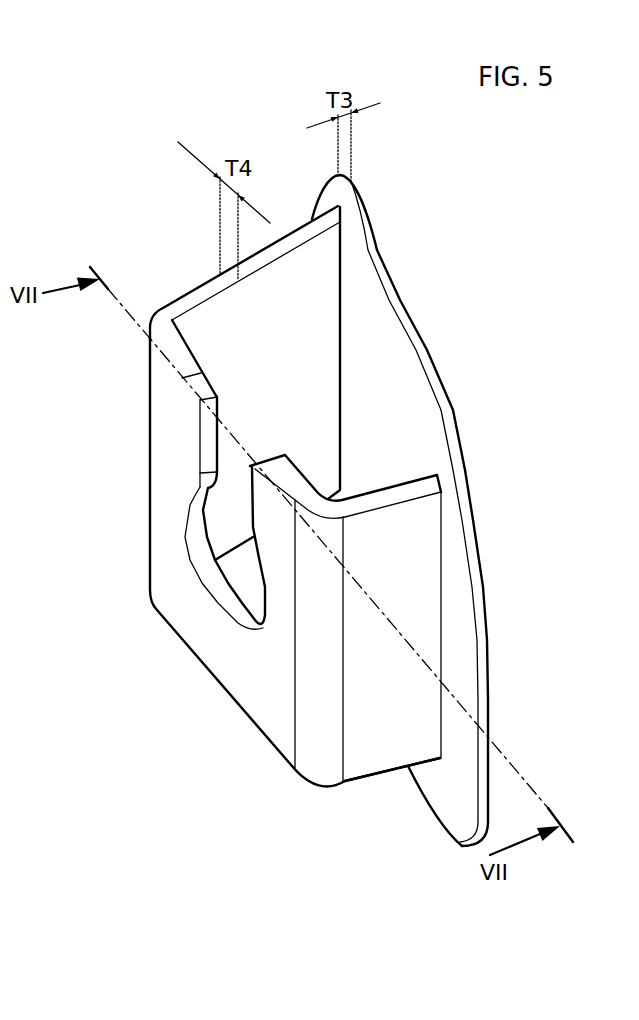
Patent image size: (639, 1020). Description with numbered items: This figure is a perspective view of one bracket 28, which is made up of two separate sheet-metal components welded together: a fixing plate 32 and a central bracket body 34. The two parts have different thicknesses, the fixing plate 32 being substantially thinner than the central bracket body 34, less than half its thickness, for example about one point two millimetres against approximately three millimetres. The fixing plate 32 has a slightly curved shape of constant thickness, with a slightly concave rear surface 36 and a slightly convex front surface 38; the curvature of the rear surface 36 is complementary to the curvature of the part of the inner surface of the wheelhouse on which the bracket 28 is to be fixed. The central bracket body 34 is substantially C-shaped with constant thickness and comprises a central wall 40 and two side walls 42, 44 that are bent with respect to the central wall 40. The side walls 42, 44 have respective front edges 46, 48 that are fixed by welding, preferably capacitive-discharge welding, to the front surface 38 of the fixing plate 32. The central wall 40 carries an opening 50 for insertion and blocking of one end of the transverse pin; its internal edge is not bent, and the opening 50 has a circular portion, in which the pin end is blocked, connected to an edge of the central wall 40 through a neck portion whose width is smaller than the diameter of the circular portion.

The bracket 28 is at (324, 517).
The fixing plate 32 is at (471, 510).
The central bracket body 34 is at (431, 677).
The rear surface 36 is at (453, 405).
The front surface 38 is at (385, 318).
The central wall 40 is at (266, 703).
The side wall 42 is at (190, 298).
The side wall 44 is at (415, 593).
The front edge 46 is at (345, 243).
The front edge 48 is at (440, 520).
The opening 50 is at (193, 530).